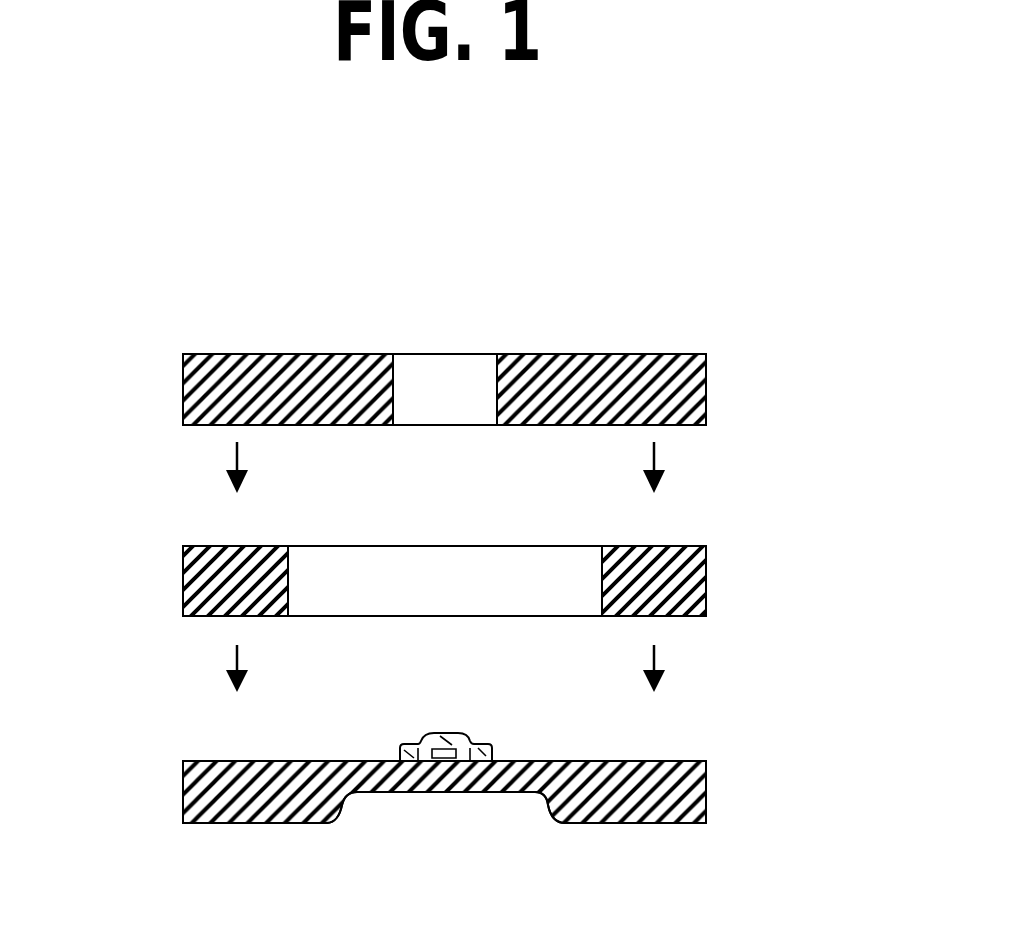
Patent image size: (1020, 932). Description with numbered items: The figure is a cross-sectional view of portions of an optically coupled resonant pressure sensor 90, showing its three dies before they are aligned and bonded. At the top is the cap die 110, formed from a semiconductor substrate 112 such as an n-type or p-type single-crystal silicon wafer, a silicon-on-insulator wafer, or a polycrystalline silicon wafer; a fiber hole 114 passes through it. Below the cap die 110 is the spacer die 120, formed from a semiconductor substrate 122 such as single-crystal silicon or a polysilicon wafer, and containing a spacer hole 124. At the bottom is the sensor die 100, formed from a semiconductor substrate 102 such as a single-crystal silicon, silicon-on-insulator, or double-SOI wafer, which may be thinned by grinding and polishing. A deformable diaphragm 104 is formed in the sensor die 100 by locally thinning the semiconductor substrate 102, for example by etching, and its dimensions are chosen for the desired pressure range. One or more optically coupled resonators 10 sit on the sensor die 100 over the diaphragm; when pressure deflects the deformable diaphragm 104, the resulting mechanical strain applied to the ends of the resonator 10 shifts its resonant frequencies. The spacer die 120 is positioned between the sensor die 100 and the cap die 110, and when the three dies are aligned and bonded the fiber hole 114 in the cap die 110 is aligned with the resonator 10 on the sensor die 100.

The optically coupled resonant pressure sensor 90 is at (178, 262).
The cap die 110 is at (535, 349).
The semiconductor substrate 112 is at (707, 408).
The fiber hole 114 is at (462, 367).
The spacer die 120 is at (535, 561).
The semiconductor substrate 122 is at (707, 601).
The spacer hole 124 is at (552, 570).
The sensor die 100 is at (535, 824).
The semiconductor substrate 102 is at (707, 810).
The deformable diaphragm 104 is at (535, 793).
The optically coupled resonator 10 is at (420, 742).